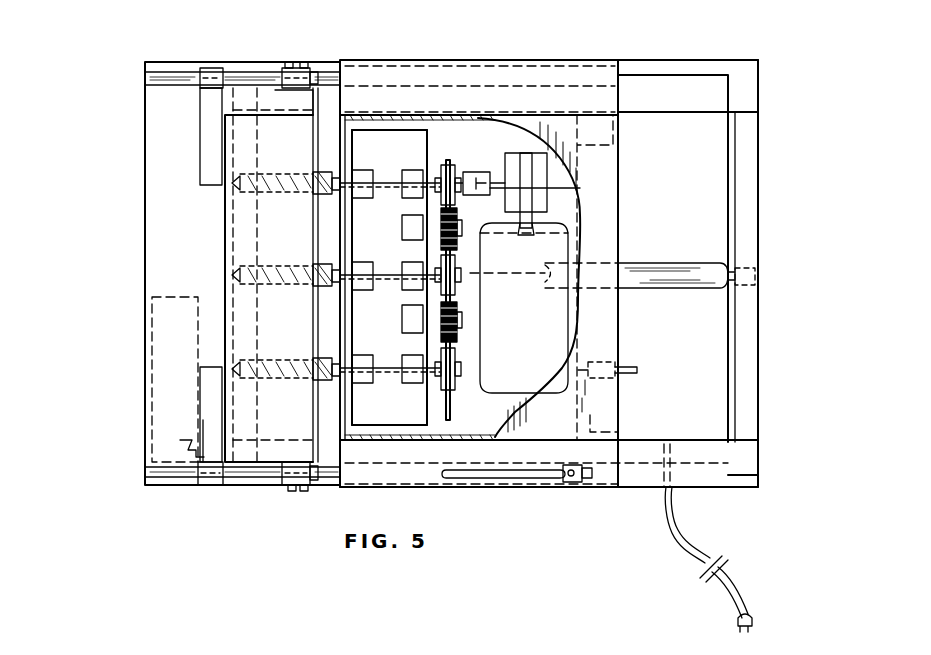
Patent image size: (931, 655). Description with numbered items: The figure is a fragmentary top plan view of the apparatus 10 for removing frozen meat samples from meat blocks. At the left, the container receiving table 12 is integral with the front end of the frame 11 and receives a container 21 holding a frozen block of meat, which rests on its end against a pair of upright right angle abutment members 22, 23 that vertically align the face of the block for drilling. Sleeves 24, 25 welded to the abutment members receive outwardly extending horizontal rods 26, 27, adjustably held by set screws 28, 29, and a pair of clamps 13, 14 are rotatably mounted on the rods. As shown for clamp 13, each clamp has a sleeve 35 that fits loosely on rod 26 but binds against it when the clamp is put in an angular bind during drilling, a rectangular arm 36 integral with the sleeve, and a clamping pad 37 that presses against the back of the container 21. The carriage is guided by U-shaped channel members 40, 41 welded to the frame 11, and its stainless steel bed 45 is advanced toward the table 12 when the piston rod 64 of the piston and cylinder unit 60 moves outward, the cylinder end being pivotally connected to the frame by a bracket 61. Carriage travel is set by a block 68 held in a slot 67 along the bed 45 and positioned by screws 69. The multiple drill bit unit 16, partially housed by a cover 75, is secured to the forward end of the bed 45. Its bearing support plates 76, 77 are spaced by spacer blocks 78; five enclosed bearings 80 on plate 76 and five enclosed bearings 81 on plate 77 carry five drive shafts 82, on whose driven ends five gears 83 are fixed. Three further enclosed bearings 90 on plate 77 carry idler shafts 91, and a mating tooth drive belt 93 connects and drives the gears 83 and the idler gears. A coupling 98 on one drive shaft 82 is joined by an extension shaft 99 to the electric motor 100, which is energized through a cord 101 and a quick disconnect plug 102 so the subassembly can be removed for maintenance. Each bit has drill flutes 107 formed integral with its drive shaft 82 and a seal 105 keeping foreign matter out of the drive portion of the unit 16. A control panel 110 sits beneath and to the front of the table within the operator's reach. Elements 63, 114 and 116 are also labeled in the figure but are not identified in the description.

The apparatus 10 is at (108, 272).
The frame 11 is at (762, 175).
The container receiving table 12 is at (142, 216).
The clamp 13 is at (205, 487).
The clamp 14 is at (211, 66).
The multiple drill bit unit 16 is at (413, 152).
The container 21 is at (240, 239).
The abutment member 22 is at (295, 462).
The abutment member 23 is at (296, 90).
The sleeve 24 is at (285, 485).
The sleeve 25 is at (285, 68).
The horizontal rod 26 is at (322, 480).
The horizontal rod 27 is at (145, 77).
The set screw 28 is at (290, 491).
The set screw 29 is at (304, 62).
The sleeve 35 is at (196, 452).
The rectangular arm 36 is at (203, 410).
The clamping pad 37 is at (202, 372).
The channel member 40 is at (752, 453).
The channel member 41 is at (752, 102).
The bed 45 is at (545, 85).
The piston and cylinder unit 60 is at (684, 263).
The bracket 61 is at (755, 275).
The side panel 63 is at (715, 345).
The piston rod 64 is at (516, 270).
The slot 67 is at (522, 478).
The block 68 is at (566, 482).
The screws 69 is at (586, 480).
The cover 75 is at (602, 162).
The bearing support plate 76 is at (356, 208).
The bearing support plate 77 is at (428, 254).
The spacer blocks 78 is at (398, 130).
The enclosed bearings 80 is at (360, 170).
The enclosed bearings 81 is at (418, 172).
The drive shafts 82 is at (392, 175).
The gears 83 is at (455, 183).
The enclosed bearings 90 is at (402, 228).
The idler shafts 91 is at (462, 222).
The drive belt 93 is at (452, 350).
The coupling 98 is at (490, 170).
The extension shaft 99 is at (490, 195).
The electric motor 100 is at (553, 190).
The cord 101 is at (572, 410).
The quick disconnect plug 102 is at (600, 378).
The seal 105 is at (318, 172).
The drill flutes 107 is at (240, 183).
The control panel 110 is at (150, 428).
The power cord 114 is at (676, 540).
The plug 116 is at (748, 620).